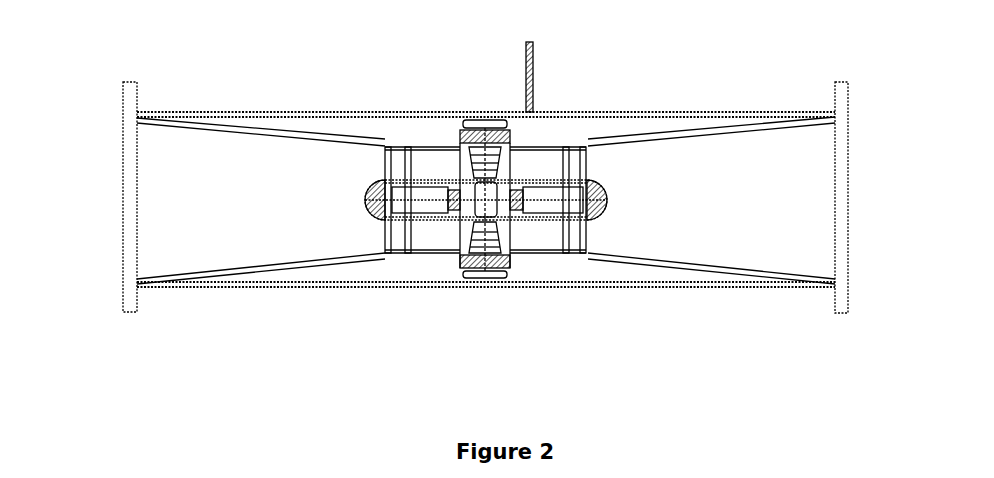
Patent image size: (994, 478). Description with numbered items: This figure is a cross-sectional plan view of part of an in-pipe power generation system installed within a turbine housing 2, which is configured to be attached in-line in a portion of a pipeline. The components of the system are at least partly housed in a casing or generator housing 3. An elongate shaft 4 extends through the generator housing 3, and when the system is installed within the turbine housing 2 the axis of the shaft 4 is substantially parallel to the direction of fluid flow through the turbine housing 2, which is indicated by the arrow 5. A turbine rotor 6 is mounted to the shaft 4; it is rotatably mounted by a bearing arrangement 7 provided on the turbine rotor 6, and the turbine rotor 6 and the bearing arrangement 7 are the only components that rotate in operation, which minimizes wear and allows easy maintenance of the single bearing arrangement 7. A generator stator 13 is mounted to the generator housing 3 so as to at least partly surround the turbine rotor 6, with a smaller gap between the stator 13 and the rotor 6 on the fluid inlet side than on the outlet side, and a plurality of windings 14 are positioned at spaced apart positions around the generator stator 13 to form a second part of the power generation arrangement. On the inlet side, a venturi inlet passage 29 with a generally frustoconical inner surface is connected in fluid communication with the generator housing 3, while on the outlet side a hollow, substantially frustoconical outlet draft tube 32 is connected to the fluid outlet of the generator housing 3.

The turbine housing 2 is at (801, 303).
The generator housing 3 is at (438, 276).
The shaft 4 is at (529, 207).
The arrow 5 is at (180, 197).
The turbine rotor 6 is at (508, 253).
The bearing arrangement 7 is at (456, 218).
The generator stator 13 is at (516, 120).
The windings 14 is at (447, 125).
The venturi inlet passage 29 is at (220, 140).
The outlet draft tube 32 is at (763, 170).